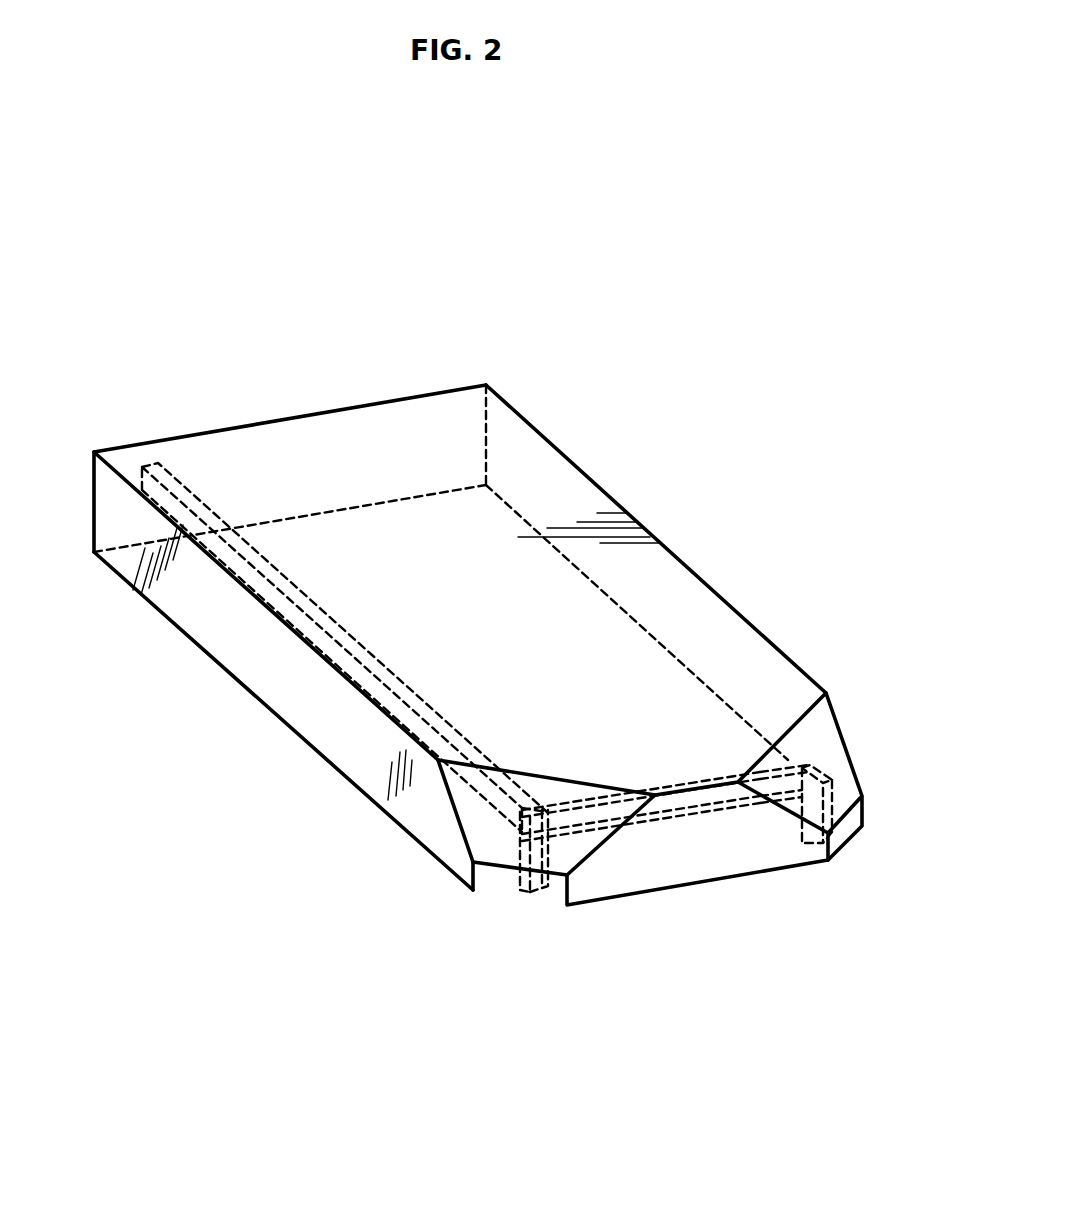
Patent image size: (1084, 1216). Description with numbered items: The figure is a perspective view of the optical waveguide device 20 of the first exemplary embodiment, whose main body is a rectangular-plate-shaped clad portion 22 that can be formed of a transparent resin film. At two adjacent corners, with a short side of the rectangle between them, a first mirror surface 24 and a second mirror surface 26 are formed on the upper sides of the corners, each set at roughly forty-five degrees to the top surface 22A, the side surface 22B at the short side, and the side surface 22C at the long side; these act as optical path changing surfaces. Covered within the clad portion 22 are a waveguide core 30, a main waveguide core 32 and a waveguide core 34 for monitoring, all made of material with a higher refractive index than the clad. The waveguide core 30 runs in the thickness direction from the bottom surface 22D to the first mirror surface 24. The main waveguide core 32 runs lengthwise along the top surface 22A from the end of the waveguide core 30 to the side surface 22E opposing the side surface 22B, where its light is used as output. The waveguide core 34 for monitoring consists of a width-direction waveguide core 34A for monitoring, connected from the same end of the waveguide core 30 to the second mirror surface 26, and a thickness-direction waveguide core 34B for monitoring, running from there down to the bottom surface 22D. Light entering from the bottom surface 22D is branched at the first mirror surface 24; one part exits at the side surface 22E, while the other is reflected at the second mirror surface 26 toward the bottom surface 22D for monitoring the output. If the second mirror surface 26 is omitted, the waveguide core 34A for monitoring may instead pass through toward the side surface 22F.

The optical waveguide device 20 is at (673, 325).
The clad portion 22 is at (400, 398).
The top surface 22A is at (377, 613).
The side surface at the short side 22B is at (645, 860).
The side surface at the long side 22C is at (345, 752).
The bottom surface 22D is at (218, 590).
The side surface 22E is at (200, 478).
The side surface 22F is at (675, 605).
The first mirror surface 24 is at (480, 802).
The second mirror surface 26 is at (825, 740).
The waveguide core 30 is at (520, 845).
The main waveguide core 32 is at (427, 708).
The waveguide core for monitoring 34 is at (892, 963).
The waveguide core for monitoring 34A is at (720, 810).
The waveguide core for monitoring 34B is at (840, 838).